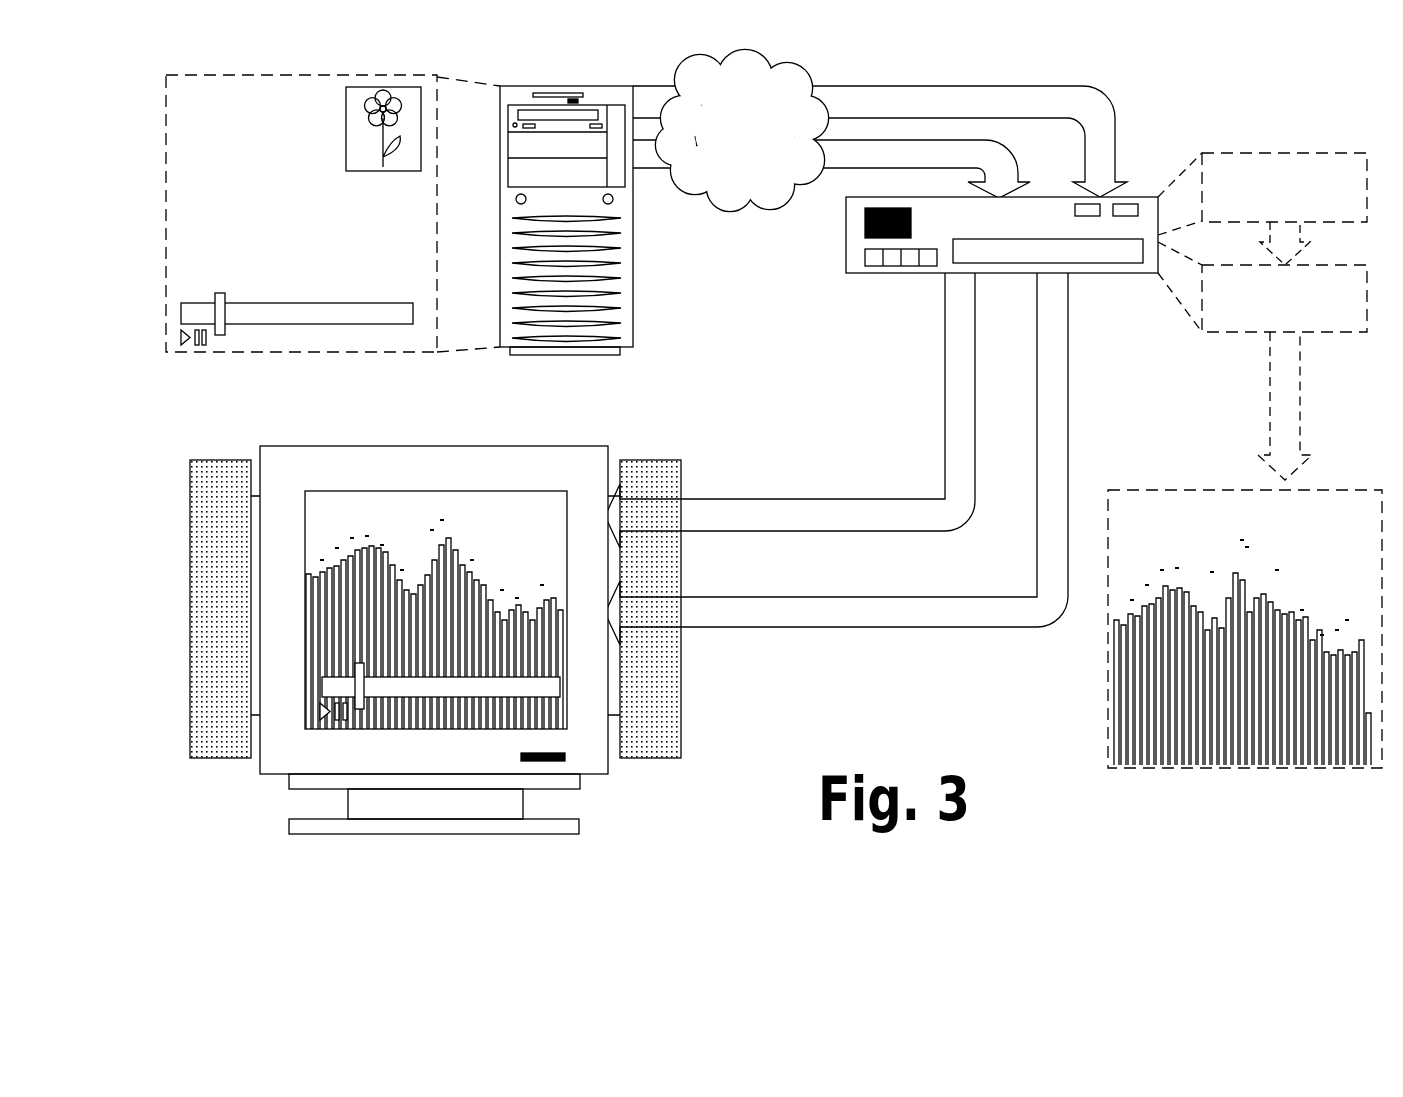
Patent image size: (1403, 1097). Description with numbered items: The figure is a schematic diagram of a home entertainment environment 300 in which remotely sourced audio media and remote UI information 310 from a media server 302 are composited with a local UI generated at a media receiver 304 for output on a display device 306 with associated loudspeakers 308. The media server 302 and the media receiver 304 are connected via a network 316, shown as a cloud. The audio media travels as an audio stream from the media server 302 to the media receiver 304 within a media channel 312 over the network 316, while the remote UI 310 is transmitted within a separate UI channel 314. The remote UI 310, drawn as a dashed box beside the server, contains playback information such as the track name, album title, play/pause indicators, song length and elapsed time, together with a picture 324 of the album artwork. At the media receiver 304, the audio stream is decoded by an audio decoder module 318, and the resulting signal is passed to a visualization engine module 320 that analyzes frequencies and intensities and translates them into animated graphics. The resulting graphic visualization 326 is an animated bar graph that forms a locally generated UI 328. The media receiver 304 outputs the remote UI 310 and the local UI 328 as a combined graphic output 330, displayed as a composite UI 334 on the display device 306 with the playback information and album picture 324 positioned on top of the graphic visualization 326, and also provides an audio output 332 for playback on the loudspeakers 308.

The home entertainment environment 300 is at (938, 698).
The media server 302 is at (633, 308).
The media receiver 304 is at (897, 273).
The display device 306 is at (597, 774).
The loudspeakers 308 is at (218, 758).
The remote UI information 310 is at (217, 352).
The media channel 312 is at (1113, 103).
The UI channel 314 is at (1013, 166).
The network 316 is at (740, 211).
The audio decoder module 318 is at (1325, 153).
The visualization engine module 320 is at (1233, 332).
The album picture 324 is at (383, 87).
The graphic visualization 326 is at (366, 526).
The locally generated UI 328 is at (1107, 675).
The combined graphic output 330 is at (738, 531).
The audio output 332 is at (740, 627).
The composite UI 334 is at (402, 491).